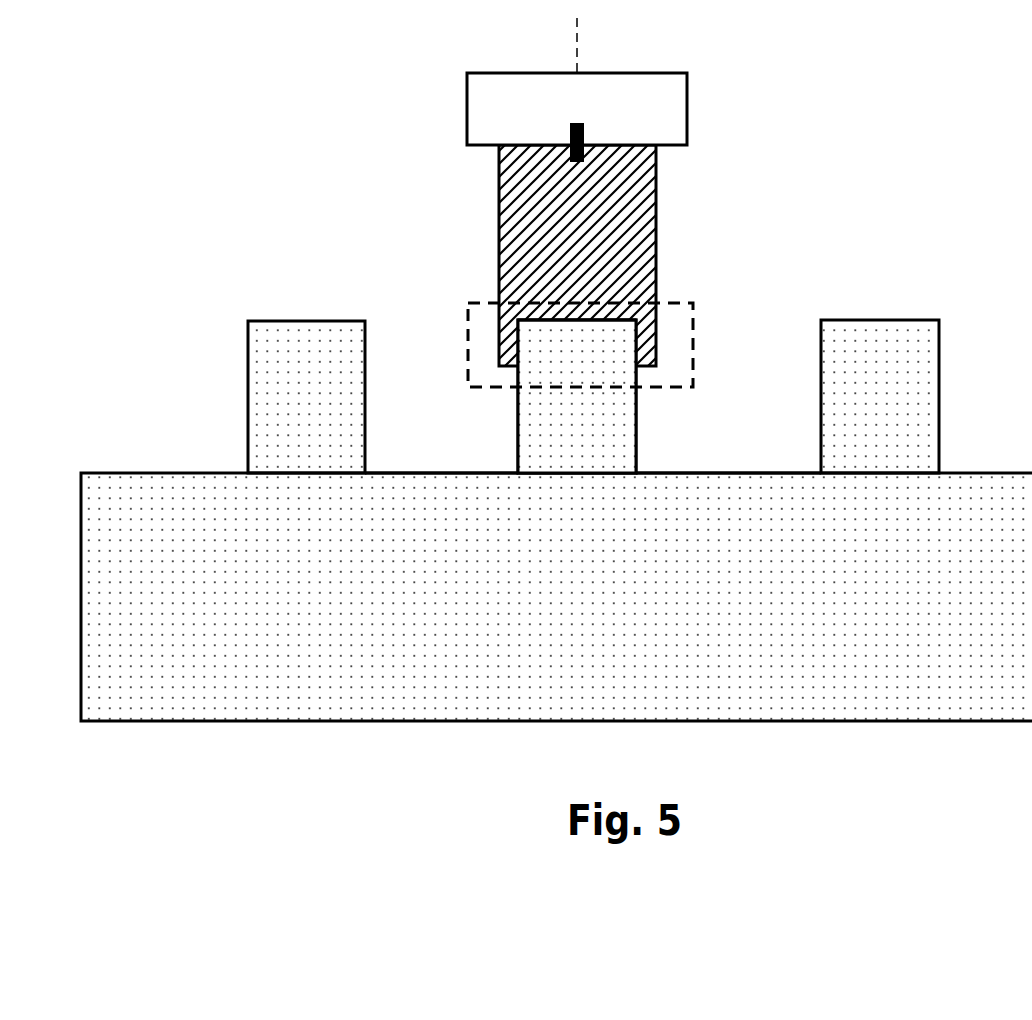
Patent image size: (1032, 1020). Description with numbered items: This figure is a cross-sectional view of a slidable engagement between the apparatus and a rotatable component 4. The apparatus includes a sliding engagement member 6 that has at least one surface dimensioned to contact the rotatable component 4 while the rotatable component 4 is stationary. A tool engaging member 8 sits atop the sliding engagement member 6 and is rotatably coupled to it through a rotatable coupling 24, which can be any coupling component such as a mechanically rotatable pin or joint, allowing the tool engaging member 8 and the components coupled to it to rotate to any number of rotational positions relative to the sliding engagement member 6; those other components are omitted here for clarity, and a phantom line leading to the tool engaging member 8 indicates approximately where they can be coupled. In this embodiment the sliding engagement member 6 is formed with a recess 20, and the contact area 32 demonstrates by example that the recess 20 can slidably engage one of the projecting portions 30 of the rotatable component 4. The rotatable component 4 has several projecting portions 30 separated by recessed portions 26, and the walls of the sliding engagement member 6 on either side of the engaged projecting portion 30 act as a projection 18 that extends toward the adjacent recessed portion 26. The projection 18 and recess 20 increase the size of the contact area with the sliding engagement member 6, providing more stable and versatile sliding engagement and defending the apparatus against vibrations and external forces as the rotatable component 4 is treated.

The rotatable component 4 is at (143, 526).
The sliding engagement member 6 is at (500, 234).
The tool engaging member 8 is at (687, 130).
The projection 18 is at (655, 357).
The recess 20 is at (560, 318).
The rotatable coupling 24 is at (585, 123).
The recessed portion 26 is at (463, 473).
The projecting portion 30 is at (332, 428).
The contact area 32 is at (680, 300).